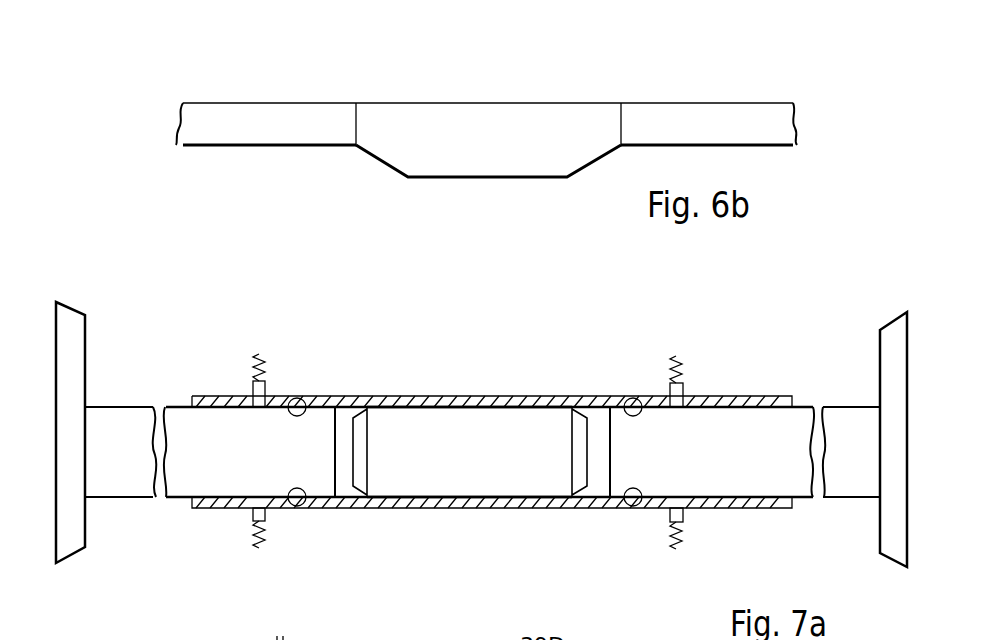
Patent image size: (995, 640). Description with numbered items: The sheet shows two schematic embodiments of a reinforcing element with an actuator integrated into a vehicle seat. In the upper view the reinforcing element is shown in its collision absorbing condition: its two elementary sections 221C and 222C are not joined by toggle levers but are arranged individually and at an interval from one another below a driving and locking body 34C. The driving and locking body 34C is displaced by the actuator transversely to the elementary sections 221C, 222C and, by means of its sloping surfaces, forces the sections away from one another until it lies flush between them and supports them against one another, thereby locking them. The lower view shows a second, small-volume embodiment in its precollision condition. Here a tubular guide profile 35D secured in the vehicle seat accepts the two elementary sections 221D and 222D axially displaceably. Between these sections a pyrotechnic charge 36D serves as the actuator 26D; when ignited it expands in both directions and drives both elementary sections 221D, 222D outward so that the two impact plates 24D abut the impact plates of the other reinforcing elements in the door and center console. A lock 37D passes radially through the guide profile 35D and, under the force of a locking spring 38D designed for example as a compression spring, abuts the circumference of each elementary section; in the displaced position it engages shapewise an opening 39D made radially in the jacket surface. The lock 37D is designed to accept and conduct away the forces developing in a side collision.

In FIG. 6B, the elementary section 221C is at (249, 112).
In FIG. 6B, the driving and locking body 34C is at (480, 114).
In FIG. 6B, the elementary section 222C is at (705, 115).
In FIG. 7A, the impact plate 24D is at (72, 320).
In FIG. 7A, the elementary section 221D is at (208, 425).
In FIG. 7A, the pyrotechnic charge 36D is at (400, 420).
In FIG. 7A, the actuator 26D is at (474, 422).
In FIG. 7A, the tubular guide profile 35D is at (561, 406).
In FIG. 7A, the elementary section 222D is at (752, 432).
In FIG. 7A, the lock 37D is at (267, 385).
In FIG. 7A, the locking spring 38D is at (259, 354).
In FIG. 7A, the opening 39D is at (297, 488).